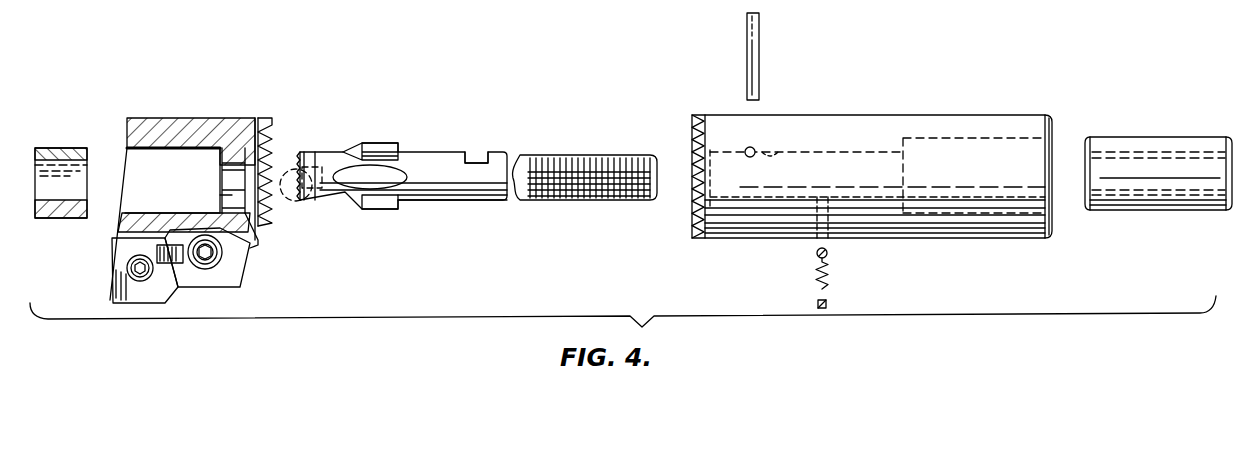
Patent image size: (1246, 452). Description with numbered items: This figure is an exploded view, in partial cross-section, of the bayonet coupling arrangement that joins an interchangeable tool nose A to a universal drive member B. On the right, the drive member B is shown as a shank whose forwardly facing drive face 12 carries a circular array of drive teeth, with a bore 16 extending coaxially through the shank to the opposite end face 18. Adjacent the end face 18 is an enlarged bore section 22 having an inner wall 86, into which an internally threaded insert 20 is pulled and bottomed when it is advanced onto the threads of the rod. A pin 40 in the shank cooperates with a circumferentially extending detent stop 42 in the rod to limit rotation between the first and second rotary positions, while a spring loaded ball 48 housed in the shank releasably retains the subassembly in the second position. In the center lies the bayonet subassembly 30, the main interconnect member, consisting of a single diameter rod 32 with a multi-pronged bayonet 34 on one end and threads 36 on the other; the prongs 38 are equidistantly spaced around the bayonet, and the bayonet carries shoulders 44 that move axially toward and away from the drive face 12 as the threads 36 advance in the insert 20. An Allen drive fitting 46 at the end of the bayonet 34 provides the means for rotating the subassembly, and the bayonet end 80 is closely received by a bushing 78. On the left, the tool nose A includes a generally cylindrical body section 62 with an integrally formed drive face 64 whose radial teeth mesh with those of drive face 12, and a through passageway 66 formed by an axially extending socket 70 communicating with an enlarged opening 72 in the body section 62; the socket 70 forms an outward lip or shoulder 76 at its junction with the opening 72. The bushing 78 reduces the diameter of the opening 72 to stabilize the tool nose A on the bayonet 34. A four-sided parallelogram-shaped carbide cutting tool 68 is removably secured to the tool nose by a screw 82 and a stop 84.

The drive face 12 is at (694, 218).
The bore 16 is at (786, 152).
The end face 18 is at (1056, 118).
The internally threaded insert 20 is at (1148, 138).
The enlarged bore section 22 is at (935, 140).
The bayonet subassembly 30 is at (429, 138).
The rod 32 is at (453, 187).
The bayonet 34 is at (353, 192).
The threads 36 is at (592, 157).
The prongs 38 is at (372, 212).
The pin 40 is at (750, 72).
The detent stop 42 is at (478, 160).
The shoulders 44 is at (398, 148).
The Allen drive fitting 46 is at (301, 203).
The spring loaded ball 48 is at (830, 249).
The body section 62 is at (190, 125).
The drive face 64 is at (262, 142).
The through passageway 66 is at (140, 185).
The cutting tool 68 is at (112, 297).
The socket 70 is at (228, 195).
The enlarged opening 72 is at (128, 160).
The lip or shoulder 76 is at (220, 150).
The bushing 78 is at (70, 147).
The end of the bayonet subassembly 80 is at (326, 152).
The screw 82 is at (127, 267).
The stop 84 is at (223, 287).
The inner wall 86 is at (905, 212).
The interchangeable tool nose A is at (153, 107).
The universal drive member B is at (831, 106).